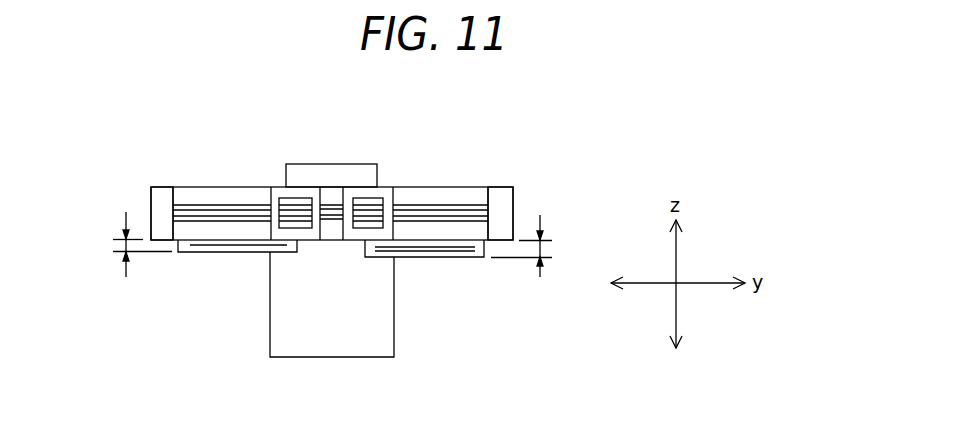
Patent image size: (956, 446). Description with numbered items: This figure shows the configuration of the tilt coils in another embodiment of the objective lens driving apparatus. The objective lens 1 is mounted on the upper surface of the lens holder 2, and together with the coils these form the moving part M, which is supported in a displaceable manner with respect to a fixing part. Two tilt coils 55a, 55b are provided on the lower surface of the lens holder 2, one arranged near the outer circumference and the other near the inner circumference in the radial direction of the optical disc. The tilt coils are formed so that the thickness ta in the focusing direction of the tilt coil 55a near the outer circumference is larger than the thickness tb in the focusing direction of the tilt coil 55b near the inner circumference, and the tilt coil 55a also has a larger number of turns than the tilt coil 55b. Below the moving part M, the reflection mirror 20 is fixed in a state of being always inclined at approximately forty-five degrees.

The objective lens 1 is at (330, 164).
The lens holder 2 is at (444, 187).
The moving part M is at (473, 187).
The reflection mirror 20 is at (281, 333).
The tilt coil 55a is at (445, 258).
The tilt coil 55b is at (213, 253).
The thickness in the focusing direction of the tilt coil arranged near to the outer ta is at (534, 246).
The thickness in the focusing direction of the tilt coil arranged near to the inner tb is at (129, 244).